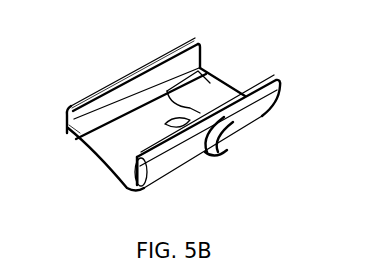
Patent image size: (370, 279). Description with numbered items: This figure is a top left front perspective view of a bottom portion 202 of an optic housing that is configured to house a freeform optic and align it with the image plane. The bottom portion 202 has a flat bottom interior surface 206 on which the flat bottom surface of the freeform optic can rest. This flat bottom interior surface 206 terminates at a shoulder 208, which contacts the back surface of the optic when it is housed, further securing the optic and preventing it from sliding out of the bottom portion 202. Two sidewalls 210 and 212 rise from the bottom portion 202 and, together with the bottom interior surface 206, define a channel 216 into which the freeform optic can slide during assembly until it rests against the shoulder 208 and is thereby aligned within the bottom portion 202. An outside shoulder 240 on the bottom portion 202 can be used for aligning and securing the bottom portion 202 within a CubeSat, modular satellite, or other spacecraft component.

The bottom portion 202 is at (179, 156).
The flat bottom interior surface 206 is at (92, 132).
The shoulder 208 is at (186, 104).
The sidewall 210 is at (140, 96).
The sidewall 212 is at (234, 123).
The channel 216 is at (123, 140).
The outside shoulder 240 is at (218, 151).